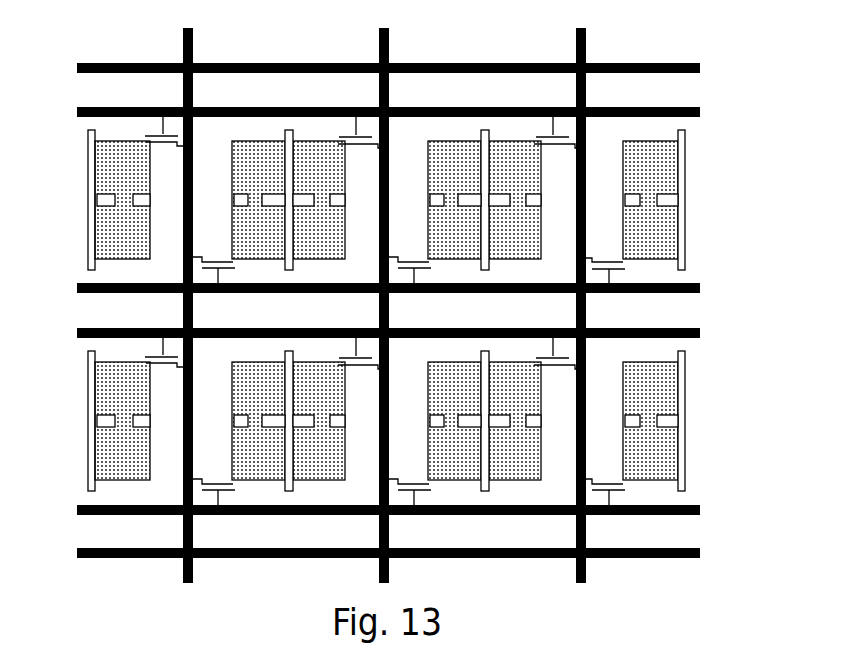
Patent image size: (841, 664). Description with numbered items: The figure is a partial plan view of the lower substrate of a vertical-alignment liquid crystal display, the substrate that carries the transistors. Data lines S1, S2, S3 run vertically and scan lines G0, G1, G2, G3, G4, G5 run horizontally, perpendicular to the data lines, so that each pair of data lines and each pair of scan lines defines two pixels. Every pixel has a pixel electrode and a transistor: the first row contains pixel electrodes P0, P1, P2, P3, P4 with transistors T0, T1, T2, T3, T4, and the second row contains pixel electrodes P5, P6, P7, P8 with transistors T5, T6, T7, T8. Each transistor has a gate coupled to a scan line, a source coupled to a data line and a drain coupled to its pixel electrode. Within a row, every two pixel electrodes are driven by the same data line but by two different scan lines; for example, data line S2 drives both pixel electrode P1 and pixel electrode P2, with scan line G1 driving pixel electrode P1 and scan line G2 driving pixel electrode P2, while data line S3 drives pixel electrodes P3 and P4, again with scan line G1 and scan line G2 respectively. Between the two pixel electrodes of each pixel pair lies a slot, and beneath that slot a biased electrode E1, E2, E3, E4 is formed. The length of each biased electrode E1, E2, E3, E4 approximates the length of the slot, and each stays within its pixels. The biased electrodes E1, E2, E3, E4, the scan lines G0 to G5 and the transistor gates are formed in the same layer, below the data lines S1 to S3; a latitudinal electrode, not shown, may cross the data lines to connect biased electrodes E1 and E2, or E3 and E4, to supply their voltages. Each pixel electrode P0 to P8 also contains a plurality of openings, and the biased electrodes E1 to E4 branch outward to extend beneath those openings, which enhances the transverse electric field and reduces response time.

The data line S1 is at (192, 291).
The data line S2 is at (385, 291).
The data line S3 is at (580, 291).
The scan line G0 is at (406, 71).
The scan line G1 is at (406, 116).
The scan line G2 is at (406, 293).
The scan line G3 is at (406, 333).
The scan line G4 is at (406, 511).
The scan line G5 is at (406, 559).
The pixel electrode P0 is at (270, 188).
The pixel electrode P1 is at (330, 188).
The pixel electrode P2 is at (467, 188).
The pixel electrode P3 is at (527, 188).
The pixel electrode P4 is at (662, 188).
The pixel electrode P5 is at (270, 409).
The pixel electrode P6 is at (330, 409).
The pixel electrode P7 is at (467, 409).
The pixel electrode P8 is at (527, 409).
The transistor T0 is at (213, 254).
The transistor T1 is at (359, 150).
The transistor T2 is at (409, 254).
The transistor T3 is at (555, 150).
The transistor T4 is at (605, 255).
The transistor T5 is at (213, 475).
The transistor T6 is at (359, 372).
The transistor T7 is at (409, 475).
The transistor T8 is at (555, 372).
The biased electrode E1 is at (286, 132).
The biased electrode E2 is at (487, 132).
The biased electrode E3 is at (286, 353).
The biased electrode E4 is at (487, 353).